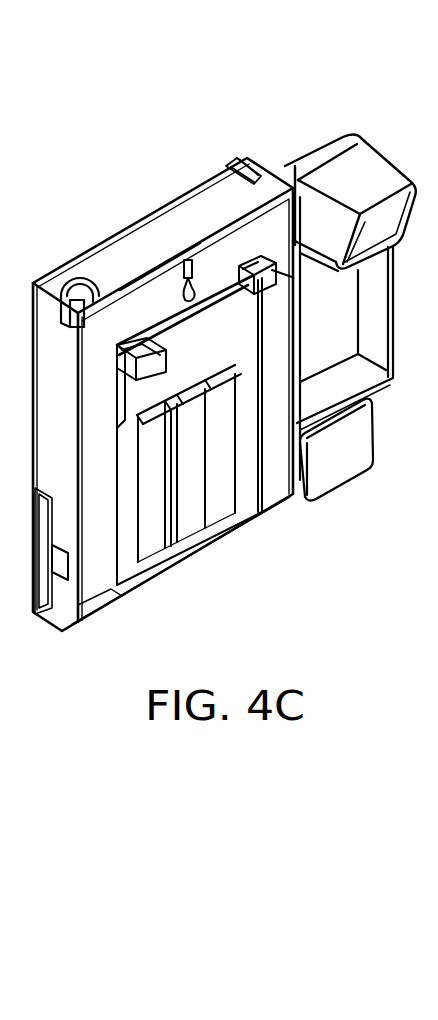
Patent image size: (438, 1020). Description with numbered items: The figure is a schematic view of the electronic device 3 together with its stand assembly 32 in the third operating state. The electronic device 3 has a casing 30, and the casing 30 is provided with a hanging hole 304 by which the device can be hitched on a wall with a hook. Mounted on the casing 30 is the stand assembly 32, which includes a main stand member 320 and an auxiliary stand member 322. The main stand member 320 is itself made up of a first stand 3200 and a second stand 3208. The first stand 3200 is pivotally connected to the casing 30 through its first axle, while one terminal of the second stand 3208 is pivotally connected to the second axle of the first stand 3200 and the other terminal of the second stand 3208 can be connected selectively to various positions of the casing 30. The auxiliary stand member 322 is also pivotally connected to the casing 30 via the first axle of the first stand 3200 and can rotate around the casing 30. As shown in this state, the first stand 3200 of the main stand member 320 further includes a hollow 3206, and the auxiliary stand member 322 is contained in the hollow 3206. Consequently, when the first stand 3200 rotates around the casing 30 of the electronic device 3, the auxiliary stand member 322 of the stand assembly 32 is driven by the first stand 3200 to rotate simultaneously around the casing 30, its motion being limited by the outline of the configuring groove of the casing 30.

The electronic device 3 is at (96, 130).
The casing 30 is at (107, 263).
The hanging hole 304 is at (165, 262).
The hollow 3206 is at (254, 264).
The stand assembly 32 is at (352, 532).
The auxiliary stand member 322 is at (168, 368).
The main stand member 320 is at (262, 573).
The first stand 3200 is at (130, 545).
The second stand 3208 is at (218, 516).